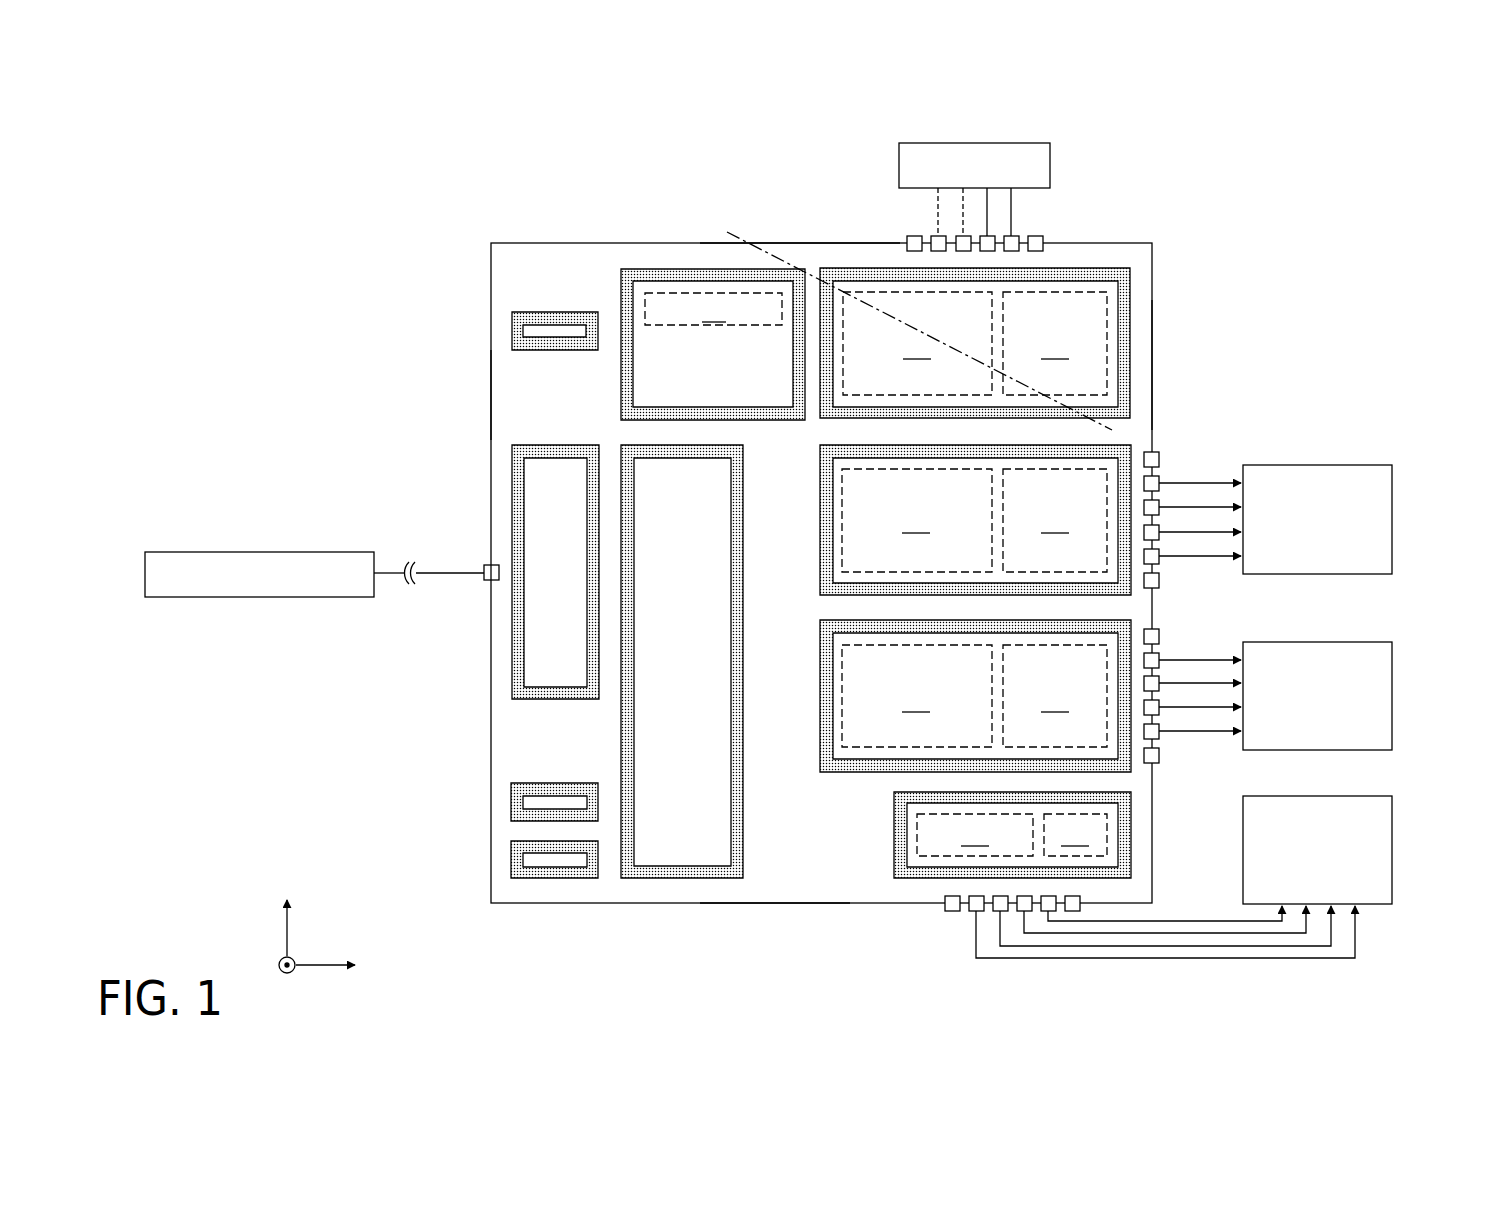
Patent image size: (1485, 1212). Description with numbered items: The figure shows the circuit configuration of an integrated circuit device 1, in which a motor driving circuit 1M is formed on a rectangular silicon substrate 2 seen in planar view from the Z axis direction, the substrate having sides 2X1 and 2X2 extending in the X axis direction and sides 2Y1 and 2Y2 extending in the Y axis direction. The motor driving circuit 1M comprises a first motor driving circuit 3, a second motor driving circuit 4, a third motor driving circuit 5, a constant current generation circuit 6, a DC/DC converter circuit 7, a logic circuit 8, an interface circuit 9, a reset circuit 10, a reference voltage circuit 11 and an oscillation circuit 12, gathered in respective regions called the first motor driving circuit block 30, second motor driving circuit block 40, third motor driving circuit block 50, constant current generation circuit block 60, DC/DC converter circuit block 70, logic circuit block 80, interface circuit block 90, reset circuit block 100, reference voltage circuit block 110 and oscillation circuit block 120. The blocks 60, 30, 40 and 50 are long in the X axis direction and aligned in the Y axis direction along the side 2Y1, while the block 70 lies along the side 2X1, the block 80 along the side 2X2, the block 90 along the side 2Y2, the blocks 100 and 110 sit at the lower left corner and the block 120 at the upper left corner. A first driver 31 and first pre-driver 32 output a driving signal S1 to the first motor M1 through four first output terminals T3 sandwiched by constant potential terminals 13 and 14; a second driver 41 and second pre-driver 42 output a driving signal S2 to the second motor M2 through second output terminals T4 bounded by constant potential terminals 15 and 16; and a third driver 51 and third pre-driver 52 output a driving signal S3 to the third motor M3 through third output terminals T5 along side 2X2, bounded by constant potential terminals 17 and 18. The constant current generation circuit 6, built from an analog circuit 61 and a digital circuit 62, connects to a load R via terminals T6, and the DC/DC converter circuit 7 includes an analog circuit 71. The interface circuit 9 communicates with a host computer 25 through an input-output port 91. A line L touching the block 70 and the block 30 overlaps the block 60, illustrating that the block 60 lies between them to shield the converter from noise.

The integrated circuit device 1 is at (816, 552).
The silicon substrate 2 is at (816, 577).
The side 2X1 is at (826, 243).
The side 2X2 is at (765, 903).
The side 2Y1 is at (1152, 380).
The side 2Y2 is at (491, 413).
The first motor driving circuit 3 is at (986, 504).
The second motor driving circuit 4 is at (986, 682).
The third motor driving circuit 5 is at (1026, 832).
The constant current generation circuit 6 is at (1023, 343).
The DC/DC converter circuit 7 is at (713, 280).
The logic circuit 8 is at (715, 714).
The interface circuit 9 is at (505, 572).
The reset circuit 10 is at (498, 779).
The reference voltage circuit 11 is at (498, 908).
The oscillation circuit 12 is at (497, 257).
The constant potential terminal 13 is at (1159, 459).
The constant potential terminal 14 is at (1159, 581).
The constant potential terminal 15 is at (1159, 636).
The constant potential terminal 16 is at (1159, 757).
The constant potential terminal 17 is at (1072, 911).
The constant potential terminal 18 is at (952, 911).
The host computer 25 is at (260, 597).
The first motor driving circuit block 30 is at (939, 520).
The first driver 31 is at (1055, 520).
The first pre-driver 32 is at (917, 520).
The second motor driving circuit block 40 is at (939, 696).
The second driver 41 is at (1055, 696).
The second pre-driver 42 is at (917, 696).
The third motor driving circuit block 50 is at (979, 835).
The third driver 51 is at (1075, 835).
The third pre-driver 52 is at (975, 835).
The constant current generation circuit block 60 is at (1021, 343).
The analog circuit 61 is at (917, 343).
The digital circuit 62 is at (1055, 343).
The DC/DC converter circuit block 70 is at (713, 290).
The analog circuit 71 is at (713, 309).
The logic circuit block 80 is at (743, 805).
The interface circuit block 90 is at (512, 522).
The input-output port 91 is at (484, 578).
The reset circuit block 100 is at (553, 783).
The reference voltage circuit block 110 is at (553, 878).
The oscillation circuit block 120 is at (563, 312).
The motor driving circuit 1M is at (803, 858).
The line L is at (738, 232).
The load R is at (1050, 165).
The first motor M1 is at (1392, 520).
The second motor M2 is at (1392, 696).
The third motor M3 is at (1392, 848).
The driving signal S1 is at (1200, 506).
The driving signal S2 is at (1200, 682).
The driving signal S3 is at (1165, 945).
The first output terminals T3 is at (1159, 488).
The second output terminals T4 is at (1159, 665).
The third output terminals T5 is at (976, 911).
The terminals T6 is at (935, 237).
The X axis X is at (337, 966).
The Y axis Y is at (286, 911).
The Z axis Z is at (277, 978).